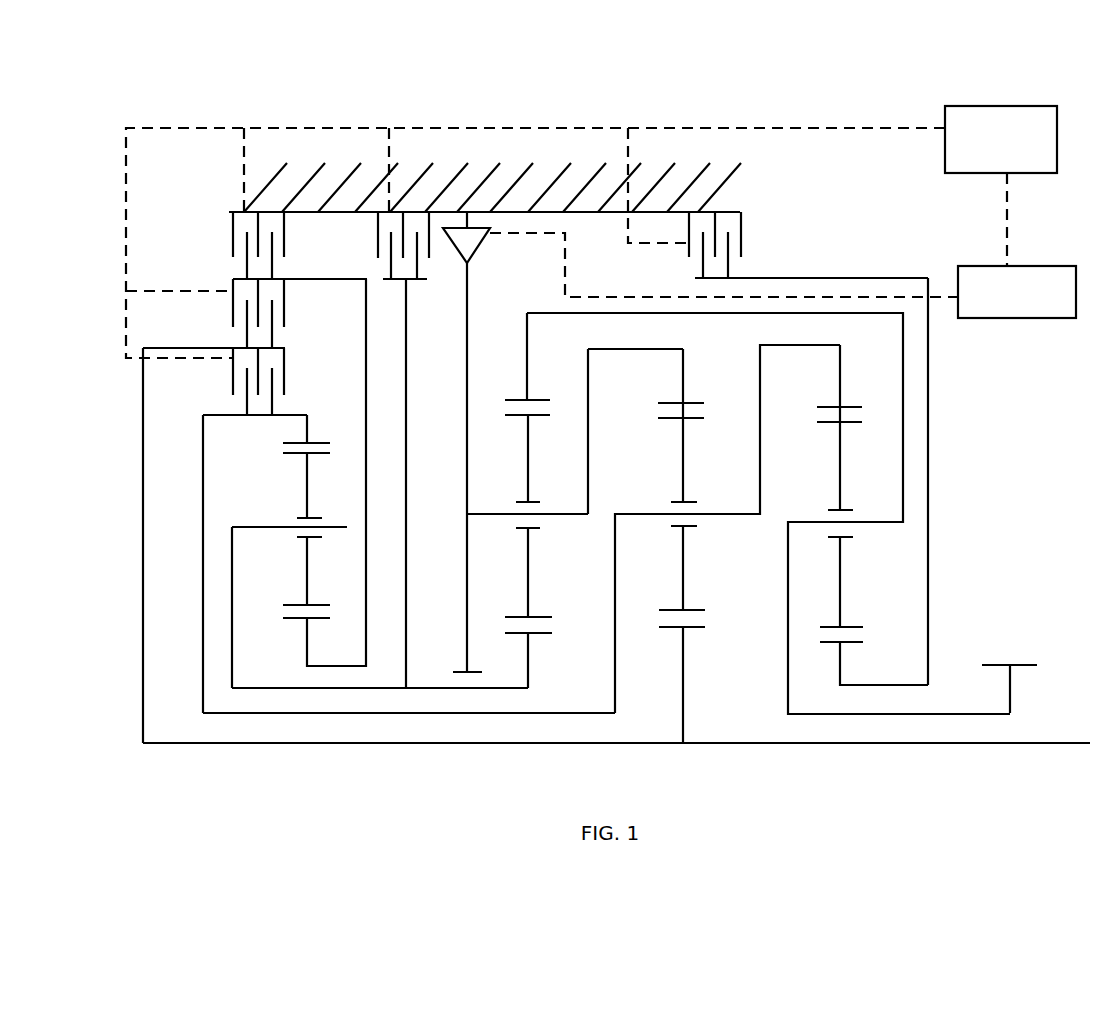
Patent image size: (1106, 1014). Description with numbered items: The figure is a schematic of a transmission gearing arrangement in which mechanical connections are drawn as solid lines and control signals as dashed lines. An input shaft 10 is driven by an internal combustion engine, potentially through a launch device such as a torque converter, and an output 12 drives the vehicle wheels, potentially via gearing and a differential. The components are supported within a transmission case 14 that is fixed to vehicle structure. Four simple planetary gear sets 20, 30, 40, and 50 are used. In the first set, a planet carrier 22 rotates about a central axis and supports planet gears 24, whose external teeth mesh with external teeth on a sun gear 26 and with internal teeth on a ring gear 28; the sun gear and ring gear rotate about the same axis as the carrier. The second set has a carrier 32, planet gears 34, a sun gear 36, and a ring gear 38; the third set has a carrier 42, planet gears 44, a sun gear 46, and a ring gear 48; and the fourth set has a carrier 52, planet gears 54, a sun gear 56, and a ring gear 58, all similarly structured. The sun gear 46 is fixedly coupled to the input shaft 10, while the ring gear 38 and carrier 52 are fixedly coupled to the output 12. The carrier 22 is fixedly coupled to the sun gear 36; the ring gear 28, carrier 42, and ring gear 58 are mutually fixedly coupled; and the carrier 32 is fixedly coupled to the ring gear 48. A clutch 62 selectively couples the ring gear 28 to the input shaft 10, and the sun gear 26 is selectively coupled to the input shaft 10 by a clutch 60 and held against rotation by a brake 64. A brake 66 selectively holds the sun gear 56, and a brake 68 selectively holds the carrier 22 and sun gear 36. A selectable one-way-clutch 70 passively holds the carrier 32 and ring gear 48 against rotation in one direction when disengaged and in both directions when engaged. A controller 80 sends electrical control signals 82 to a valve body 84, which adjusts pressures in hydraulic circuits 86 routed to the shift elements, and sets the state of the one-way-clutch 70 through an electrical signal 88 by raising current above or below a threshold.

The input shaft 10 is at (933, 743).
The output 12 is at (995, 665).
The transmission case 14 is at (733, 172).
The first planetary gear set 20 is at (409, 536).
The planet carrier 22 is at (232, 538).
The planet gears 24 is at (307, 495).
The sun gear 26 is at (308, 628).
The ring gear 28 is at (310, 433).
The second planetary gear set 30 is at (551, 528).
The carrier 32 is at (468, 432).
The planet gears 34 is at (528, 462).
The sun gear 36 is at (528, 665).
The ring gear 38 is at (527, 355).
The third planetary gear set 40 is at (727, 559).
The carrier 42 is at (760, 387).
The planet gears 44 is at (683, 478).
The sun gear 46 is at (683, 672).
The ring gear 48 is at (683, 370).
The fourth planetary gear set 50 is at (768, 550).
The carrier 52 is at (788, 637).
The planet gears 54 is at (840, 480).
The sun gear 56 is at (840, 672).
The ring gear 58 is at (840, 360).
The clutch 60 is at (233, 307).
The clutch 62 is at (233, 375).
The brake 64 is at (230, 240).
The brake 66 is at (742, 238).
The brake 68 is at (378, 234).
The selectable one-way-clutch 70 is at (480, 243).
The controller 80 is at (1045, 317).
The electrical control signals 82 is at (1007, 243).
The valve body 84 is at (980, 173).
The hydraulic circuits 86 is at (922, 128).
The electrical signal 88 is at (565, 250).